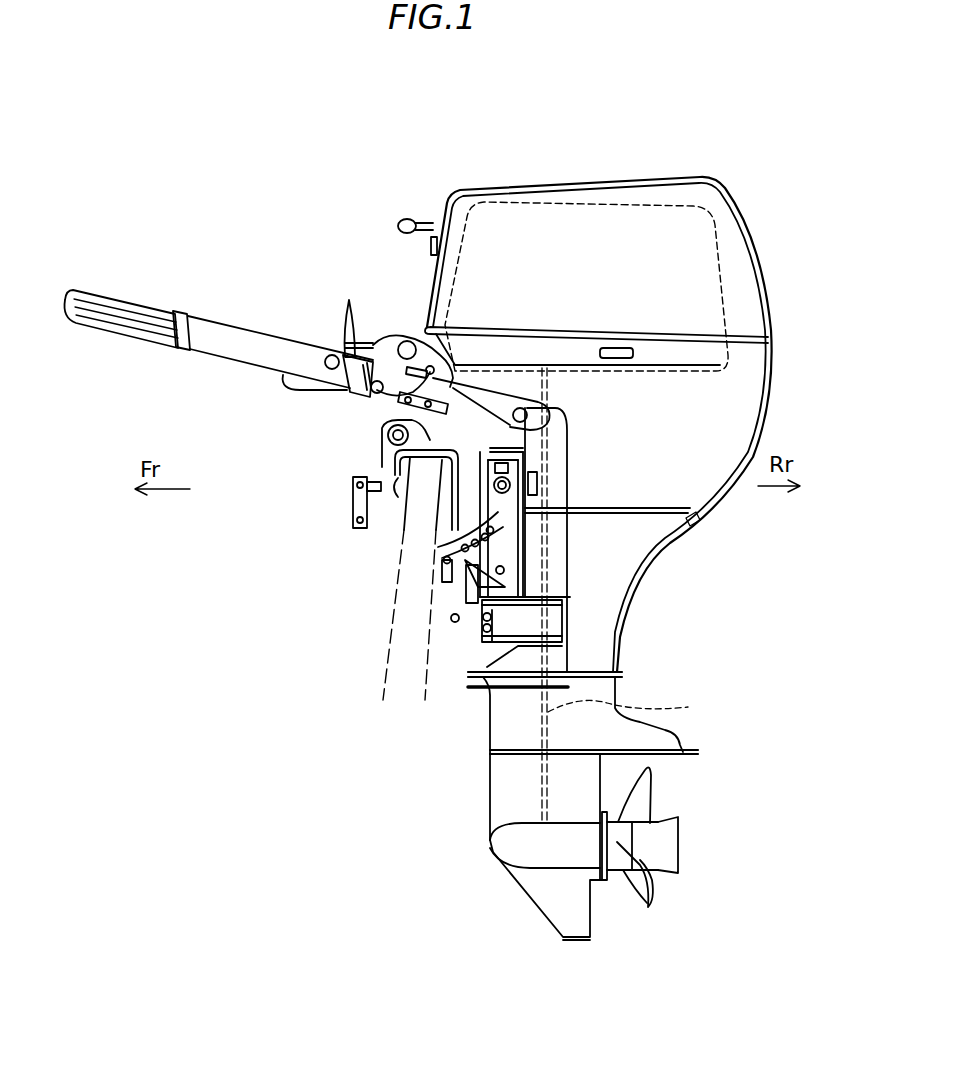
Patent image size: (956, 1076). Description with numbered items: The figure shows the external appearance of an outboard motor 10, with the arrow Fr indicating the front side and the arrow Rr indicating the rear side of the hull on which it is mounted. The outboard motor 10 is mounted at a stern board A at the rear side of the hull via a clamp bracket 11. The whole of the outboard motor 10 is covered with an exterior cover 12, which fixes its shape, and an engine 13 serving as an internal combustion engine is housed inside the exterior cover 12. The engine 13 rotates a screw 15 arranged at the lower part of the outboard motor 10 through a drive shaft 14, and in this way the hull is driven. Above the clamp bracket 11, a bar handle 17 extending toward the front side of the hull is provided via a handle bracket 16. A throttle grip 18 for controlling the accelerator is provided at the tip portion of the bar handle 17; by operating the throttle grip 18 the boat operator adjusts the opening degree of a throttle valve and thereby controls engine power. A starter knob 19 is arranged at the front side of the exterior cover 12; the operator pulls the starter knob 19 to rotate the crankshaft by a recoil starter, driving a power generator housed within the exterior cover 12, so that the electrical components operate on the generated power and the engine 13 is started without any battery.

The outboard motor 10 is at (662, 152).
The clamp bracket 11 is at (385, 437).
The exterior cover 12 is at (741, 208).
The engine 13 is at (500, 216).
The drive shaft 14 is at (601, 808).
The screw 15 is at (651, 887).
The handle bracket 16 is at (372, 396).
The bar handle 17 is at (233, 342).
The throttle grip 18 is at (140, 300).
The starter knob 19 is at (398, 225).
The stern board A is at (393, 600).